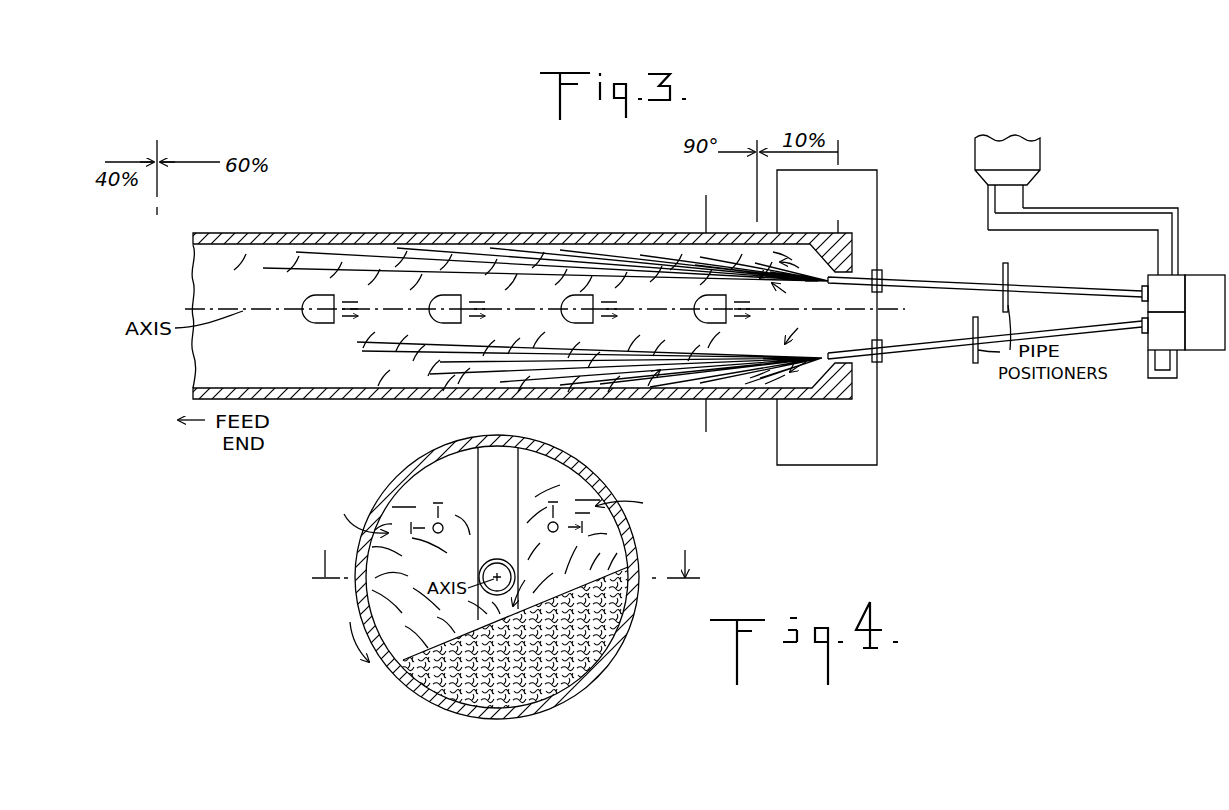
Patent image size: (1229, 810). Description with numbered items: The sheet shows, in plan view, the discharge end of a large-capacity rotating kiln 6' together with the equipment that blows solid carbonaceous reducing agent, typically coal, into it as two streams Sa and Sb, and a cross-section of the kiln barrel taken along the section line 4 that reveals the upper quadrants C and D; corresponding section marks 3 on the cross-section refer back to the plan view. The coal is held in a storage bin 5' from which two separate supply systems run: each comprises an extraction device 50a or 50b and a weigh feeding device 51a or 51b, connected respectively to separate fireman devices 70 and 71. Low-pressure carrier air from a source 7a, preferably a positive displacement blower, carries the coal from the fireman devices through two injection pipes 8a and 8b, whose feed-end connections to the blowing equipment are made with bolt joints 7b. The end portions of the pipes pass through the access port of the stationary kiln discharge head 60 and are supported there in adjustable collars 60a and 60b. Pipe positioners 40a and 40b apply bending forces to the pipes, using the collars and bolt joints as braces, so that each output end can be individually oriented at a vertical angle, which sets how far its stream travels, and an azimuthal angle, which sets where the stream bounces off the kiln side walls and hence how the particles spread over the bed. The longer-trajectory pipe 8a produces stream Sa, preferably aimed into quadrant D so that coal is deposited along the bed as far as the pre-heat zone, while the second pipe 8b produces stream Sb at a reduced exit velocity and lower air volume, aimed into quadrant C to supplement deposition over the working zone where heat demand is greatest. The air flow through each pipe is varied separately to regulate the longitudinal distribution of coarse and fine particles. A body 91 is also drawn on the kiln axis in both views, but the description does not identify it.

In FIG. 3, the rotating kiln 6' is at (522, 301).
In FIG. 3, the section line 4— 4 is at (709, 212).
In FIG. 3, the pellet / material body 91 is at (694, 310).
In FIG. 4, the pellet / material body 91 is at (508, 560).
In FIG. 3, the stationary kiln discharge head 60 is at (868, 171).
In FIG. 3, the adjustable collar 60a is at (882, 274).
In FIG. 3, the adjustable collar 60b is at (882, 358).
In FIG. 3, the pipe positioner 40a is at (1003, 270).
In FIG. 3, the pipe positioner 40b is at (973, 327).
In FIG. 3, the storage bin 5' is at (1007, 160).
In FIG. 3, the extraction device 50a is at (988, 222).
In FIG. 3, the extraction device 50b is at (1027, 193).
In FIG. 3, the weigh feeding device 51a is at (1040, 232).
In FIG. 3, the weigh feeding device 51b is at (1122, 208).
In FIG. 3, the injection pipe 8a is at (1053, 287).
In FIG. 3, the injection pipe 8b is at (1075, 338).
In FIG. 3, the fireman device 70 is at (1178, 306).
In FIG. 3, the fireman device 71 is at (1178, 345).
In FIG. 3, the carrier air source 7a is at (1218, 325).
In FIG. 3, the bolt joint 7b is at (1142, 287).
In FIG. 3, the coal stream Sa is at (794, 300).
In FIG. 4, the coal stream Sa is at (633, 503).
In FIG. 3, the coal stream Sb is at (806, 333).
In FIG. 4, the coal stream Sb is at (354, 513).
In FIG. 4, the section line for FIG. 3 is at (506, 551).
In FIG. 4, the upper quadrant C is at (468, 482).
In FIG. 4, the upper quadrant D is at (541, 482).